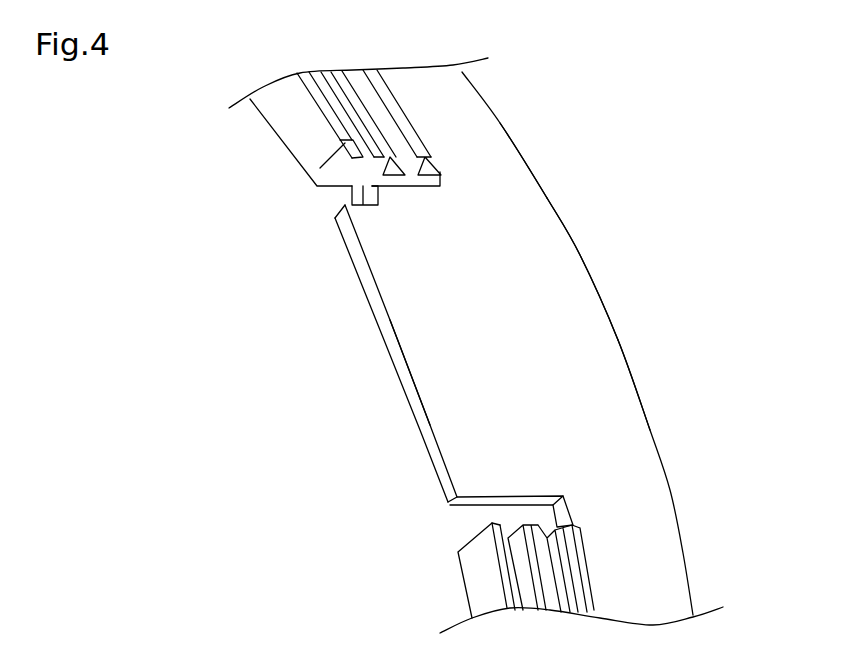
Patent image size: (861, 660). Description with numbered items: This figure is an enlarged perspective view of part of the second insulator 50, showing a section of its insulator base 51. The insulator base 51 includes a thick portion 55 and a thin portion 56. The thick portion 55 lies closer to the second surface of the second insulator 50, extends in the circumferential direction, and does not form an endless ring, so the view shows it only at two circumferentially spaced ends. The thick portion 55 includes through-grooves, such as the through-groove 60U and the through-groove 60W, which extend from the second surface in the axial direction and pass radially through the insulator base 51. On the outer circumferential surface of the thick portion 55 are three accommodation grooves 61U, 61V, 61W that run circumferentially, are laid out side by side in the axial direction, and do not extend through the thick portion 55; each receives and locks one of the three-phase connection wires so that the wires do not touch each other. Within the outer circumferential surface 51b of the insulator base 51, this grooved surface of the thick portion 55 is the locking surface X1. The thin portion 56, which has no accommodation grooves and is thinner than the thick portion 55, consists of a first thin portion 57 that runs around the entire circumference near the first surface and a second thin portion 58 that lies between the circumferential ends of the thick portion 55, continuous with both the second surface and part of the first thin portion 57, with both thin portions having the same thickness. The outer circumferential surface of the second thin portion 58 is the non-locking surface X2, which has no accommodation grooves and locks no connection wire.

The second insulator 50 is at (549, 201).
The insulator base 51 is at (583, 266).
The outer circumferential surface 51b is at (521, 154).
The first thin portion 57 is at (620, 345).
The thick portion 55 is at (285, 120).
The thin portion 56 is at (413, 301).
The second thin portion 58 is at (440, 368).
The through-groove 60U is at (553, 513).
The through-groove 60W is at (352, 193).
The accommodation groove 61U is at (437, 163).
The accommodation groove 61V is at (402, 158).
The accommodation groove 61W is at (353, 158).
The locking surface X1 is at (337, 110).
The non-locking surface X2 is at (463, 442).